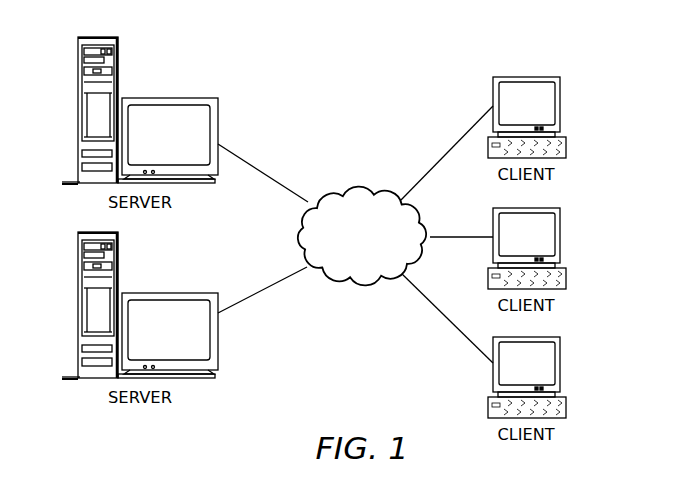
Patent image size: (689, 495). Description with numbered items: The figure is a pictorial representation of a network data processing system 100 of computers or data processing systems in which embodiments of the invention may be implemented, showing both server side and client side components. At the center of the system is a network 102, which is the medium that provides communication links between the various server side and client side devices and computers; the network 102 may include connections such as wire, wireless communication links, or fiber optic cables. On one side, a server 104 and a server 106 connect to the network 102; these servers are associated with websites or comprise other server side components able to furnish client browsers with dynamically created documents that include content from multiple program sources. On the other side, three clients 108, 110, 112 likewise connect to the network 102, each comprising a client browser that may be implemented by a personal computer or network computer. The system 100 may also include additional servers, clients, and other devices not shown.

The network data processing system 100 is at (408, 85).
The network 102 is at (338, 190).
The server 104 is at (78, 113).
The server 106 is at (78, 310).
The client 108 is at (560, 105).
The client 110 is at (560, 237).
The client 112 is at (560, 365).